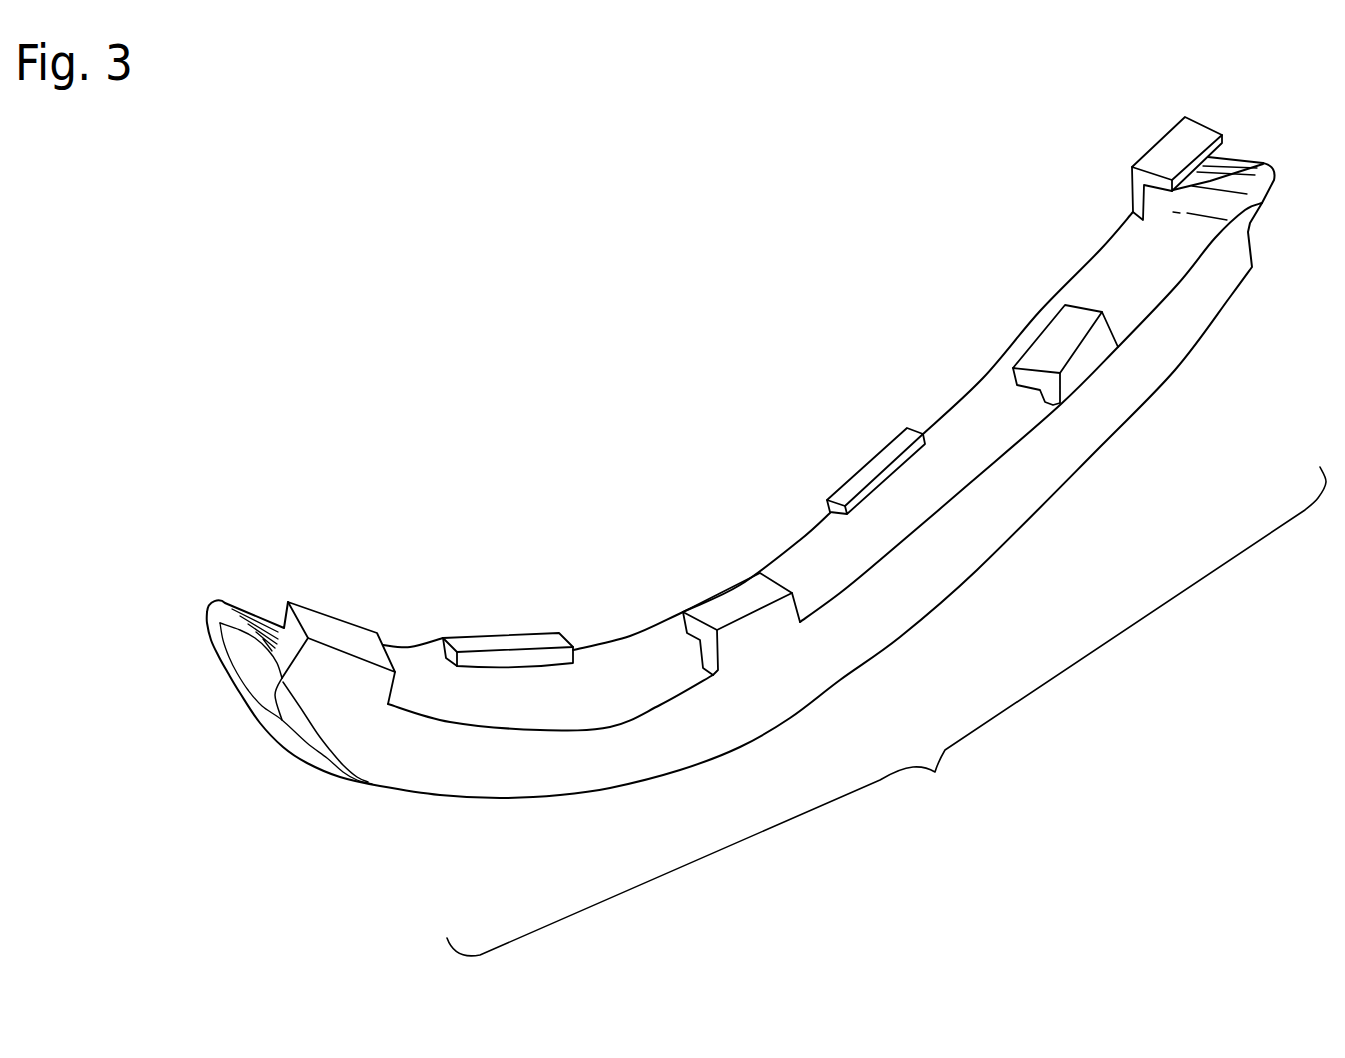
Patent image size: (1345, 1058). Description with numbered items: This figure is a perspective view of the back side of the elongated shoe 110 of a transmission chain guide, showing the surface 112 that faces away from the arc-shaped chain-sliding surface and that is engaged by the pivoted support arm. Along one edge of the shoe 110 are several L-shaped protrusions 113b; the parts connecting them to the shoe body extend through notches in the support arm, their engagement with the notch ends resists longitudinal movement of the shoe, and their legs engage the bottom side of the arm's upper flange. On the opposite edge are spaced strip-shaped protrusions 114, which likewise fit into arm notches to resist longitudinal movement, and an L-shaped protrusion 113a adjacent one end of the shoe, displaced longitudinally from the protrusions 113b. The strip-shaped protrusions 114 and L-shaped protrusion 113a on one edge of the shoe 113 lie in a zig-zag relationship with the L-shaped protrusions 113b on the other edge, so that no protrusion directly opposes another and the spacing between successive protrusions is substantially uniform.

The shoe 110 is at (632, 453).
The surface 112 is at (985, 420).
The shoe 113 is at (886, 711).
The L-shaped protrusion 113a is at (1160, 155).
The L-shaped protrusions 113b is at (1080, 367).
The strip-shaped protrusions 114 is at (850, 482).